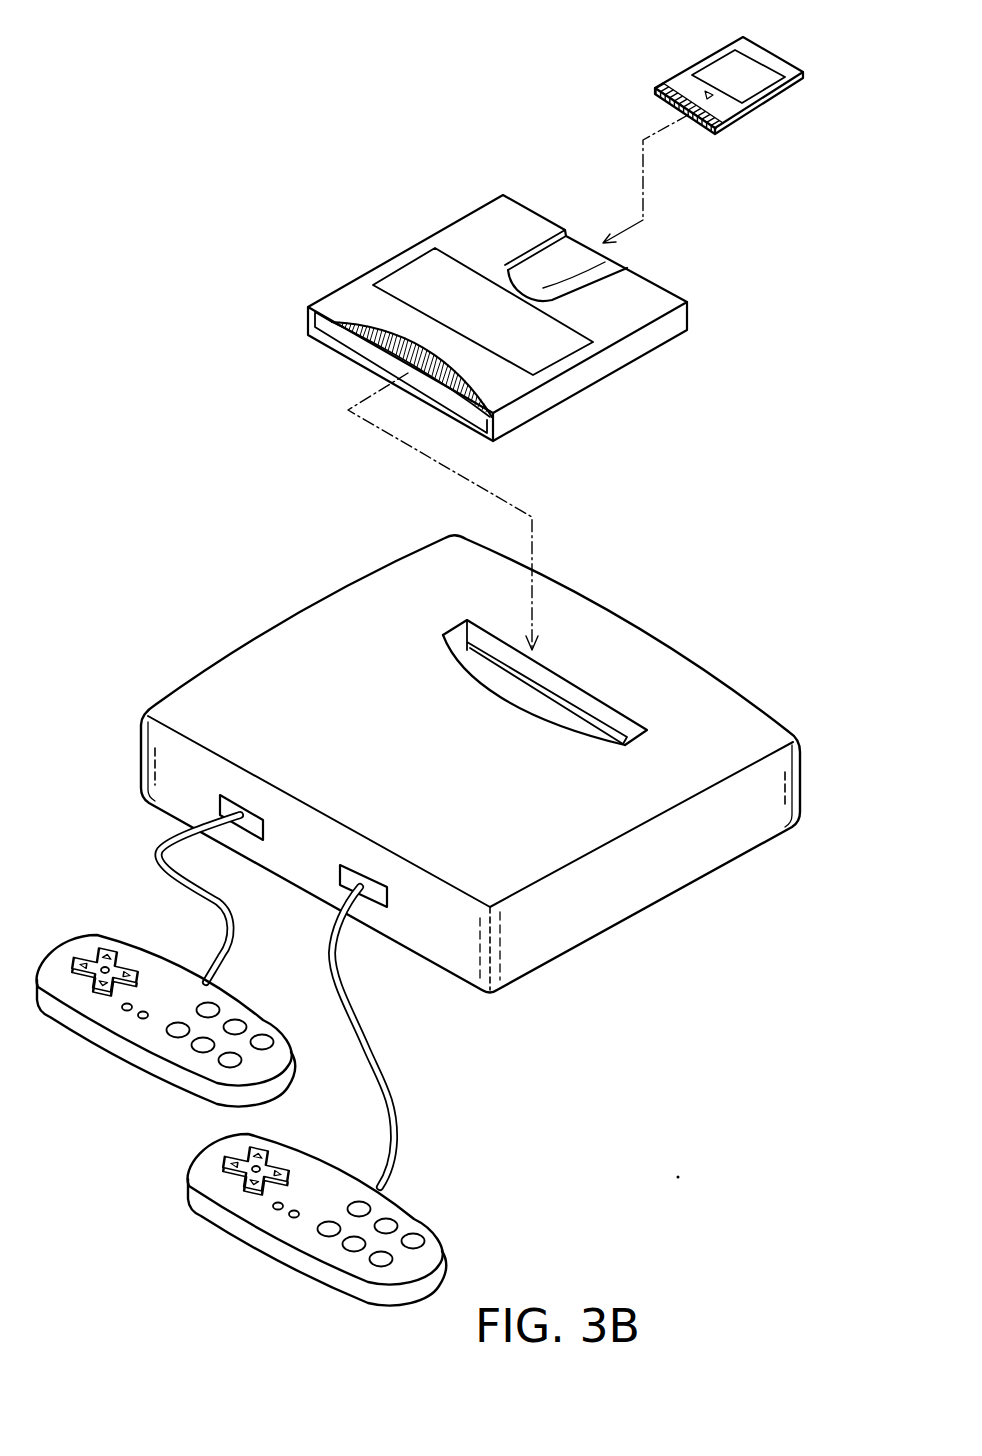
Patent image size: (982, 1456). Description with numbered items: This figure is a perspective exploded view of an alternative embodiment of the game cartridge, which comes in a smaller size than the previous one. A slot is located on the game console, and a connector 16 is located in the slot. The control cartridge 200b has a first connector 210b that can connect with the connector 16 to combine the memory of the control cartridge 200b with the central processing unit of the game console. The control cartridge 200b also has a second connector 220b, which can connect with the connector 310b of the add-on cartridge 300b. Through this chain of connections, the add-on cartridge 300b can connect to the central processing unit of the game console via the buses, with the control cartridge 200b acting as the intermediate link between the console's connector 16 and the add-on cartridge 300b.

The add-on cartridge 300b is at (742, 117).
The connector 310b is at (655, 105).
The control cartridge 200b is at (507, 316).
The first connector 210b is at (307, 340).
The second connector 220b is at (607, 262).
The connector 16 is at (563, 693).